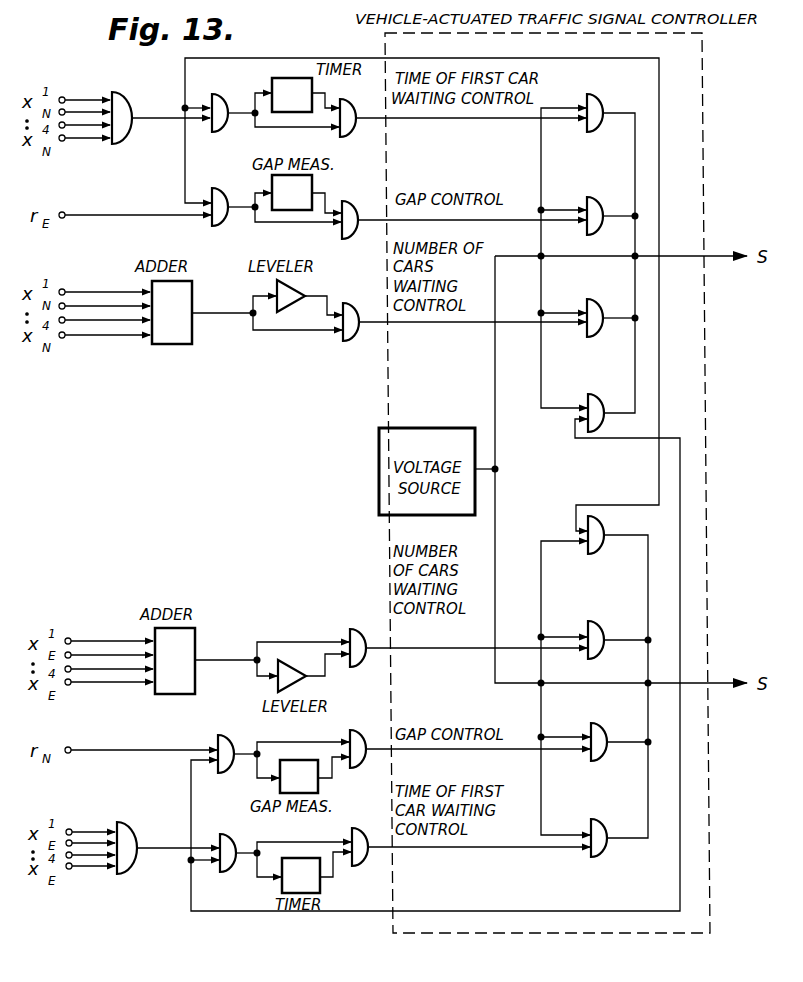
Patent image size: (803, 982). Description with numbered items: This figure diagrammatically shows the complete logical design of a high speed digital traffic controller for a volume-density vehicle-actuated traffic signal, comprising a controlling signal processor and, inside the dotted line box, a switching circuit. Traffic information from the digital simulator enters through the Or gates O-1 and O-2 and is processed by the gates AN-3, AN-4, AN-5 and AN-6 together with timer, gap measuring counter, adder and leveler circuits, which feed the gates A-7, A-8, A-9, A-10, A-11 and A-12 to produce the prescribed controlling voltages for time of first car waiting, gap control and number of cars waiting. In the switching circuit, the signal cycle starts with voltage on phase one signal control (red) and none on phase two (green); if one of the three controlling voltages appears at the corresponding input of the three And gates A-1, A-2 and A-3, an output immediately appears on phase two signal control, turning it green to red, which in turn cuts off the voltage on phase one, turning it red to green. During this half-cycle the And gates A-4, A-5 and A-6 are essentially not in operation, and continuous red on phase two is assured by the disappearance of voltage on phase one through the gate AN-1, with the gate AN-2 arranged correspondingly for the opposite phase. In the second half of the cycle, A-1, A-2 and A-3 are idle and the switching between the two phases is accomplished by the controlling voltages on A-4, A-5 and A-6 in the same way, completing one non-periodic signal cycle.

The OR gate (north inputs) O-1 is at (116, 129).
The OR gate (east inputs) O-2 is at (132, 858).
The gate AN-1 is at (614, 416).
The AND gate AN-2 is at (607, 546).
The AND gate AN-3 is at (220, 124).
The AND gate AN-4 is at (220, 218).
The AND gate AN-5 is at (220, 766).
The AND gate AN-6 is at (225, 864).
The And gate A-1 is at (592, 124).
The And gate A-2 is at (592, 226).
The And gate A-3 is at (592, 328).
The And gate A-4 is at (605, 648).
The And gate A-5 is at (605, 752).
The And gate A-6 is at (605, 848).
The gate A-7 is at (354, 130).
The gate A-8 is at (352, 231).
The gate A-9 is at (345, 334).
The gate A-10 is at (357, 659).
The gate A-11 is at (360, 759).
The gate A-12 is at (365, 858).